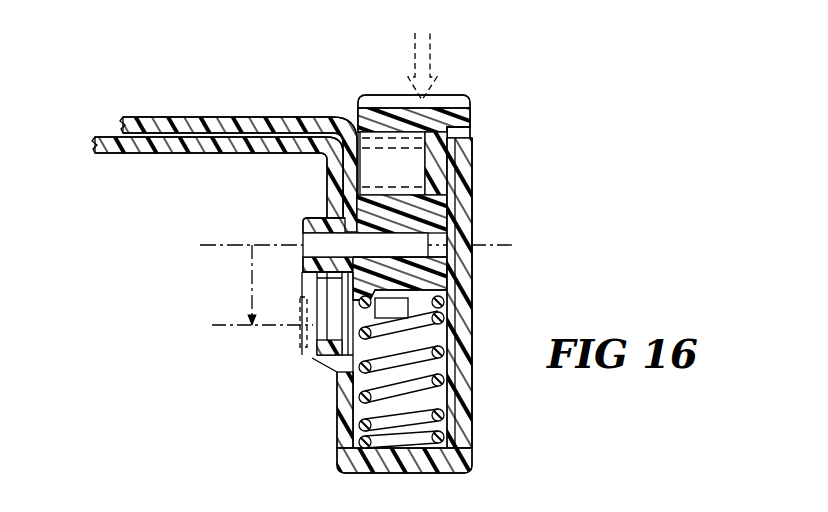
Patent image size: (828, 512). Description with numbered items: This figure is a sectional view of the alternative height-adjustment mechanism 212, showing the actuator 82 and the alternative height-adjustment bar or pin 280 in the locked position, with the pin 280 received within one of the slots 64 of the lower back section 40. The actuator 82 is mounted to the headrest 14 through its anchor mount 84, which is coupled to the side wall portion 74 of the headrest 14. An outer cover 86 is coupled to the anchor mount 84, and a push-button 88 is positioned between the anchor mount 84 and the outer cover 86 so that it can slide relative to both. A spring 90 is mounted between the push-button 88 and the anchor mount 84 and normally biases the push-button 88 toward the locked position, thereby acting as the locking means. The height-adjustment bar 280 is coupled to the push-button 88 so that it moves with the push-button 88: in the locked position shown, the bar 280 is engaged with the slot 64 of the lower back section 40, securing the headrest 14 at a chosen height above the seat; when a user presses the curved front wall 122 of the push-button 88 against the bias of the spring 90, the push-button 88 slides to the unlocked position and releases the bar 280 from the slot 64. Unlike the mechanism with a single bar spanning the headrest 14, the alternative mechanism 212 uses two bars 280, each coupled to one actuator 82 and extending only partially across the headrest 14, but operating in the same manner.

The headrest 14 is at (167, 112).
The lower back section 40 is at (152, 156).
The side wall portion 74 is at (345, 167).
The slot 64 is at (303, 237).
The height-adjustment bar 280 is at (300, 272).
The push-button 88 is at (388, 105).
The curved front wall 122 is at (453, 102).
The alternative height-adjustment mechanism 212 is at (528, 121).
The actuator 82 is at (509, 217).
The outer cover 86 is at (474, 364).
The anchor mount 84 is at (332, 429).
The spring 90 is at (434, 409).